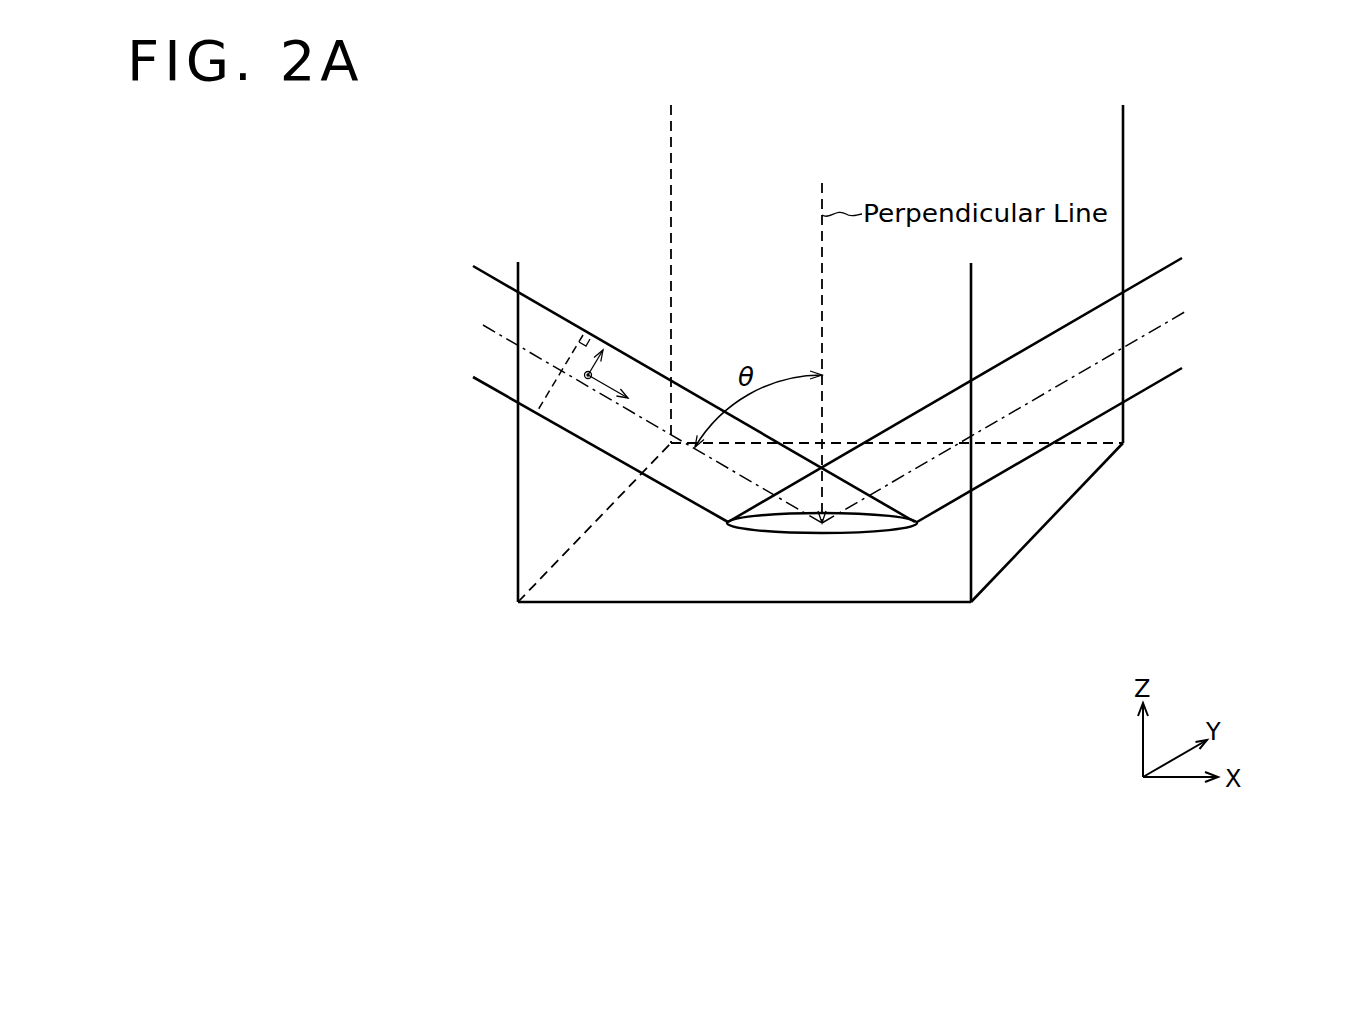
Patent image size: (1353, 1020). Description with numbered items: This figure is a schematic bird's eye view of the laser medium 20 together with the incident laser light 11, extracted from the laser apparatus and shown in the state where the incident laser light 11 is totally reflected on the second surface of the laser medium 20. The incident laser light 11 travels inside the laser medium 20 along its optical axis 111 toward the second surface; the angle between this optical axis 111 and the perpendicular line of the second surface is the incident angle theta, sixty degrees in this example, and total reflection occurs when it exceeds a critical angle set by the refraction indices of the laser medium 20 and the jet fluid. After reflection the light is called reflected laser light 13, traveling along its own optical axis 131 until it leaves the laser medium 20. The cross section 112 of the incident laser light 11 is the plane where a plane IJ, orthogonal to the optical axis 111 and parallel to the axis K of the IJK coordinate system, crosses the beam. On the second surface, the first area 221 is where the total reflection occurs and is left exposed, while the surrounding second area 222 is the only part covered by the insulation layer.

The incident laser light 11 is at (505, 368).
The optical axis 111 is at (498, 337).
The cross section 112 is at (595, 337).
The reflected laser light 13 is at (1157, 373).
The optical axis 131 is at (1142, 335).
The laser medium 20 is at (1000, 573).
The first area 221 is at (798, 538).
The second area 222 is at (586, 580).